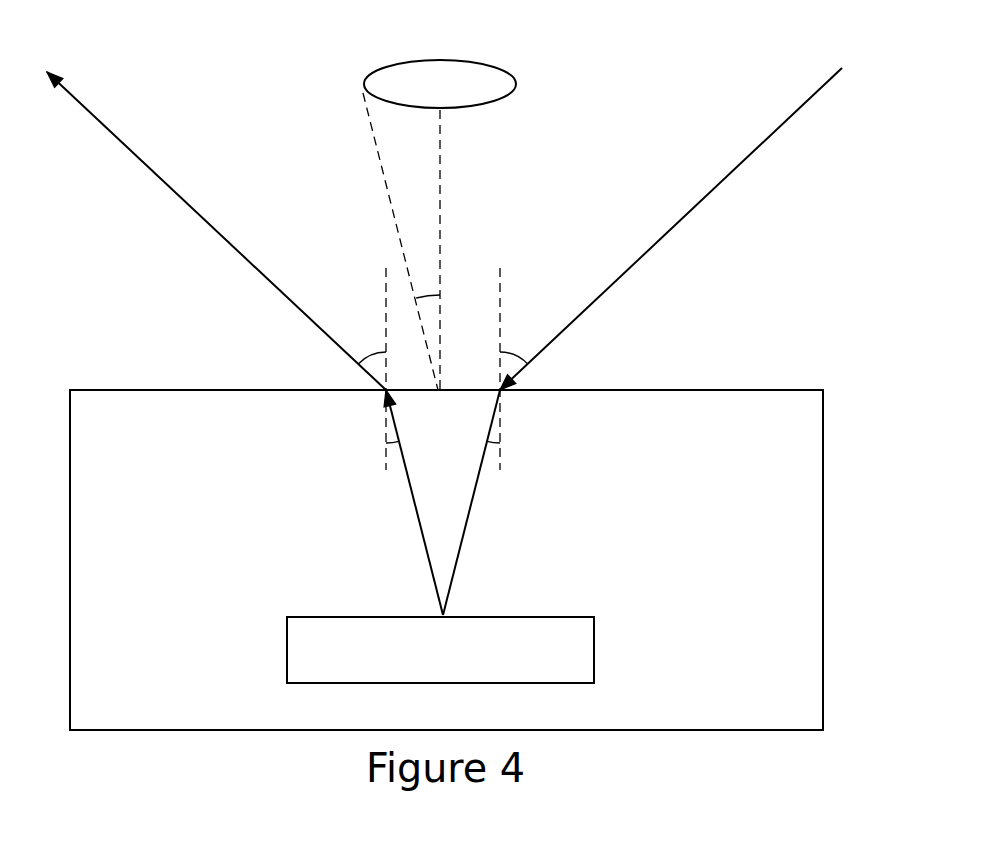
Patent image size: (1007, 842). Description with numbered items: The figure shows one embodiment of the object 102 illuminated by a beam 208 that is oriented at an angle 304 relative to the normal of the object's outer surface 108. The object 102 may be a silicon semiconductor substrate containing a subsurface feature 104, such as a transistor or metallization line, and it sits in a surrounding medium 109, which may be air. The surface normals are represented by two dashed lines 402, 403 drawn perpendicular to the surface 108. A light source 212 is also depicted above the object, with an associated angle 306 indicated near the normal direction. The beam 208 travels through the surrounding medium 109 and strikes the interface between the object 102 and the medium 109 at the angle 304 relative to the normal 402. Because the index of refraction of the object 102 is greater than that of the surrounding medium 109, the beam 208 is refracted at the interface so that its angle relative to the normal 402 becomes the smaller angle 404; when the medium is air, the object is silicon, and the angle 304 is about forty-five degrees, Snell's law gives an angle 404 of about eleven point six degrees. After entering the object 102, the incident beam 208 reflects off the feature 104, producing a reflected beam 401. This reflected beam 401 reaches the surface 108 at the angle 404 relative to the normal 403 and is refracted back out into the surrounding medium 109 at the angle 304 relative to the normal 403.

The object 102 is at (738, 390).
The subsurface feature 104 is at (550, 617).
The outer surface 108 is at (662, 348).
The surrounding medium 109 is at (818, 257).
The light source 212 is at (517, 82).
The beam 208 is at (725, 175).
The reflected beam 401 is at (182, 195).
The source axis angle 306 is at (423, 256).
The normal dashed line 402 is at (500, 272).
The normal dashed line 403 is at (385, 272).
The angle 304 is at (366, 342).
The angle 404 is at (398, 468).